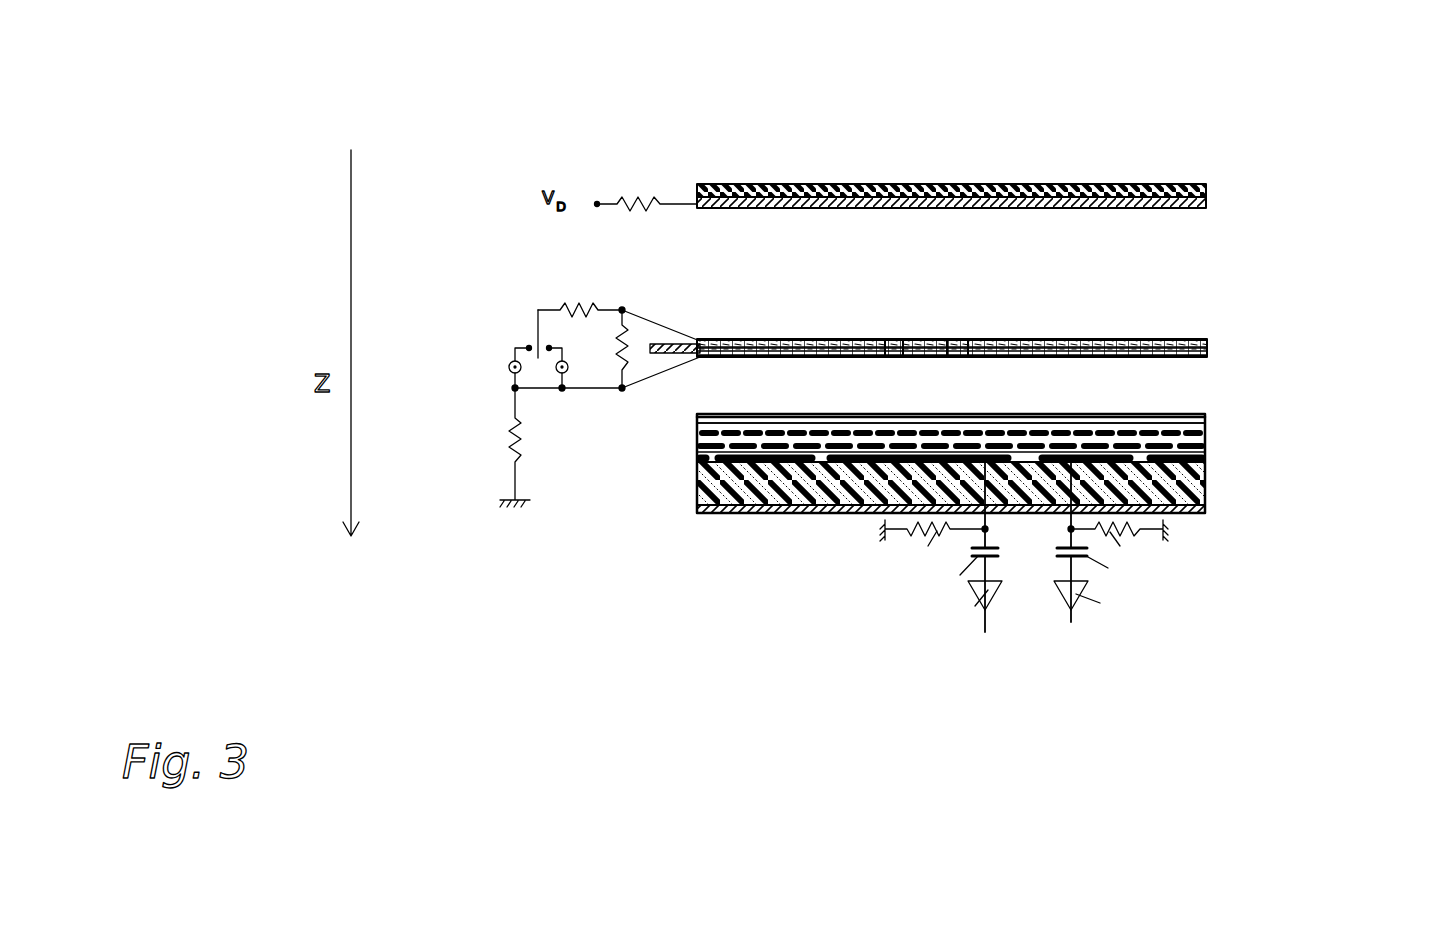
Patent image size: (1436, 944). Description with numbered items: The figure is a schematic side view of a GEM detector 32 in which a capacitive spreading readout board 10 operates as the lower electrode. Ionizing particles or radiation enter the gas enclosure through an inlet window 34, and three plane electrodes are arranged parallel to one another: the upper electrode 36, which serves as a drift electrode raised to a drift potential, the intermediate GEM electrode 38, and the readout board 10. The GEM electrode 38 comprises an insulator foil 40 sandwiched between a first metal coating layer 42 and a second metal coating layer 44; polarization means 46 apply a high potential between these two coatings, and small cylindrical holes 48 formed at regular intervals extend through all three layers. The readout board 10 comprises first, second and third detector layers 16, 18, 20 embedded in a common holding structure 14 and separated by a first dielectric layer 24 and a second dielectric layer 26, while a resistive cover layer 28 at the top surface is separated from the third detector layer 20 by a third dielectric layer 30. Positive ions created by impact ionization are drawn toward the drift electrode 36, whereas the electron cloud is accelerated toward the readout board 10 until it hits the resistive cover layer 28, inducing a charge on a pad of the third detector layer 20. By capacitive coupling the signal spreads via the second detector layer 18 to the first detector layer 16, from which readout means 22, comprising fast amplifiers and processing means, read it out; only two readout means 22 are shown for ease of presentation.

The readout board 10 is at (814, 545).
The common holding structure 14 is at (768, 492).
The first detector layer 16 is at (1208, 457).
The second detector layer 18 is at (1208, 445).
The third detector layer 20 is at (1208, 438).
The readout means 22 is at (1073, 652).
The first dielectric layer 24 is at (697, 450).
The second dielectric layer 26 is at (697, 428).
The resistive cover layer 28 is at (1208, 427).
The third dielectric layer 30 is at (738, 426).
The GEM detector 32 is at (535, 131).
The inlet window 34 is at (1206, 186).
The upper electrode 36 is at (1206, 205).
The GEM electrode 38 is at (1213, 346).
The insulator foil 40 is at (1121, 339).
The first metal coating layer 42 is at (1062, 339).
The second metal coating layer 44 is at (1153, 357).
The polarization means 46 is at (636, 393).
The cylindrical holes 48 is at (968, 339).